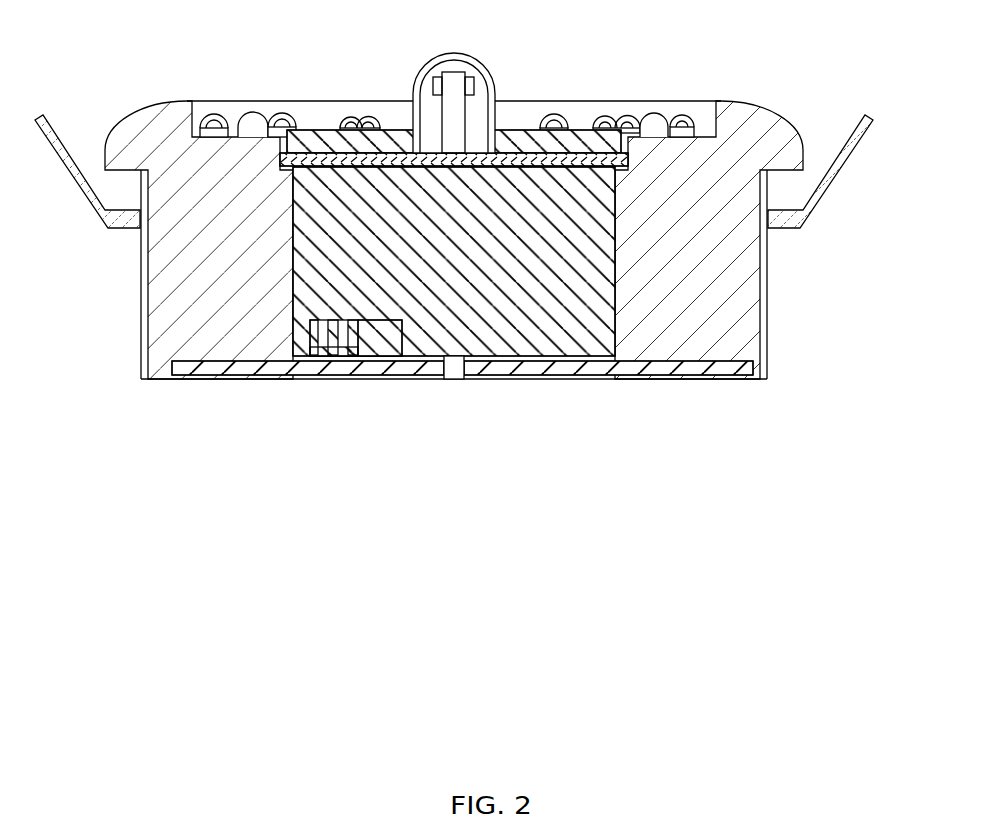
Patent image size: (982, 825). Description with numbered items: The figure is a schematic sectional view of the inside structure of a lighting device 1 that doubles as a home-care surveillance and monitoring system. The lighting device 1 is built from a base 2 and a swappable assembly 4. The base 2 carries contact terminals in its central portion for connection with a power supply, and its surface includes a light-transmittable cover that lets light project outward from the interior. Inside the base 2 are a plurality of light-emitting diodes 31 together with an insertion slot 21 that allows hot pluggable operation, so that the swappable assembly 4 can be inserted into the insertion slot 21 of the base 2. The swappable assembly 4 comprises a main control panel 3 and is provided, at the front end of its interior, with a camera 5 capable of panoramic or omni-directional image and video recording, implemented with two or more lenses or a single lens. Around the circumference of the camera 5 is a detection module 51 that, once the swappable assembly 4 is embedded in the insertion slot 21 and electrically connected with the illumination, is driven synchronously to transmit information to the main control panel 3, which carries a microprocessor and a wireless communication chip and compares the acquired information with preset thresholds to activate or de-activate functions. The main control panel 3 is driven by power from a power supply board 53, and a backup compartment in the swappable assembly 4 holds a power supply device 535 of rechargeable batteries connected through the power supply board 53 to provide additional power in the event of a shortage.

The lighting device 1 is at (152, 95).
The base 2 is at (783, 117).
The insertion slot 21 is at (296, 222).
The main control panel 3 is at (172, 380).
The light-emitting diodes 31 is at (256, 112).
The swappable assembly 4 is at (582, 361).
The camera 5 is at (453, 78).
The detection module 51 is at (330, 128).
The power supply board 53 is at (360, 369).
The power supply device 535 is at (385, 348).